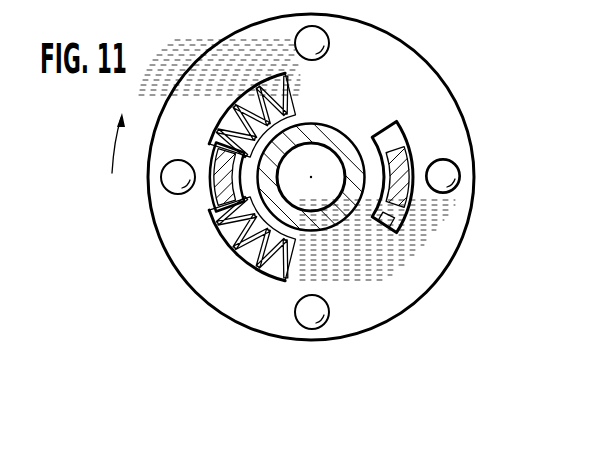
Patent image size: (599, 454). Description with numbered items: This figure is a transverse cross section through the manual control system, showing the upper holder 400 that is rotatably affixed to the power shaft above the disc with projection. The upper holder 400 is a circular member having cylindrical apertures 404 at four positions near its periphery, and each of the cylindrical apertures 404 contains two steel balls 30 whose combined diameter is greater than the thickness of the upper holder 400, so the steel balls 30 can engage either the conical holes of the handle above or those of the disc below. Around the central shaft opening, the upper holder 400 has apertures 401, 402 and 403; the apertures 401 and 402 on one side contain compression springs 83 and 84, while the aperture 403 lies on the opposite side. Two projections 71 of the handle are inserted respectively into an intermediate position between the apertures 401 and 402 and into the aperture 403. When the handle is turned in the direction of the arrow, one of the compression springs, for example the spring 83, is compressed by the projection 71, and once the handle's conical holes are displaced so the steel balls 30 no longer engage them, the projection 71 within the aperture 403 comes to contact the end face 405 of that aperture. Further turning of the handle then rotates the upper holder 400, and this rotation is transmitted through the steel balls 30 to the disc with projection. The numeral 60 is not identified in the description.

The upper holder 400 is at (428, 69).
The cylindrical apertures 404 is at (328, 52).
The steel balls 30 is at (447, 168).
The compression spring 83 is at (207, 141).
The compression spring 84 is at (218, 236).
The aperture 401 is at (225, 110).
The aperture 402 is at (247, 262).
The projections of the handle 71 is at (222, 185).
The aperture 403 is at (398, 128).
The end face 405 is at (398, 226).
The brake assembly 60 is at (332, 449).